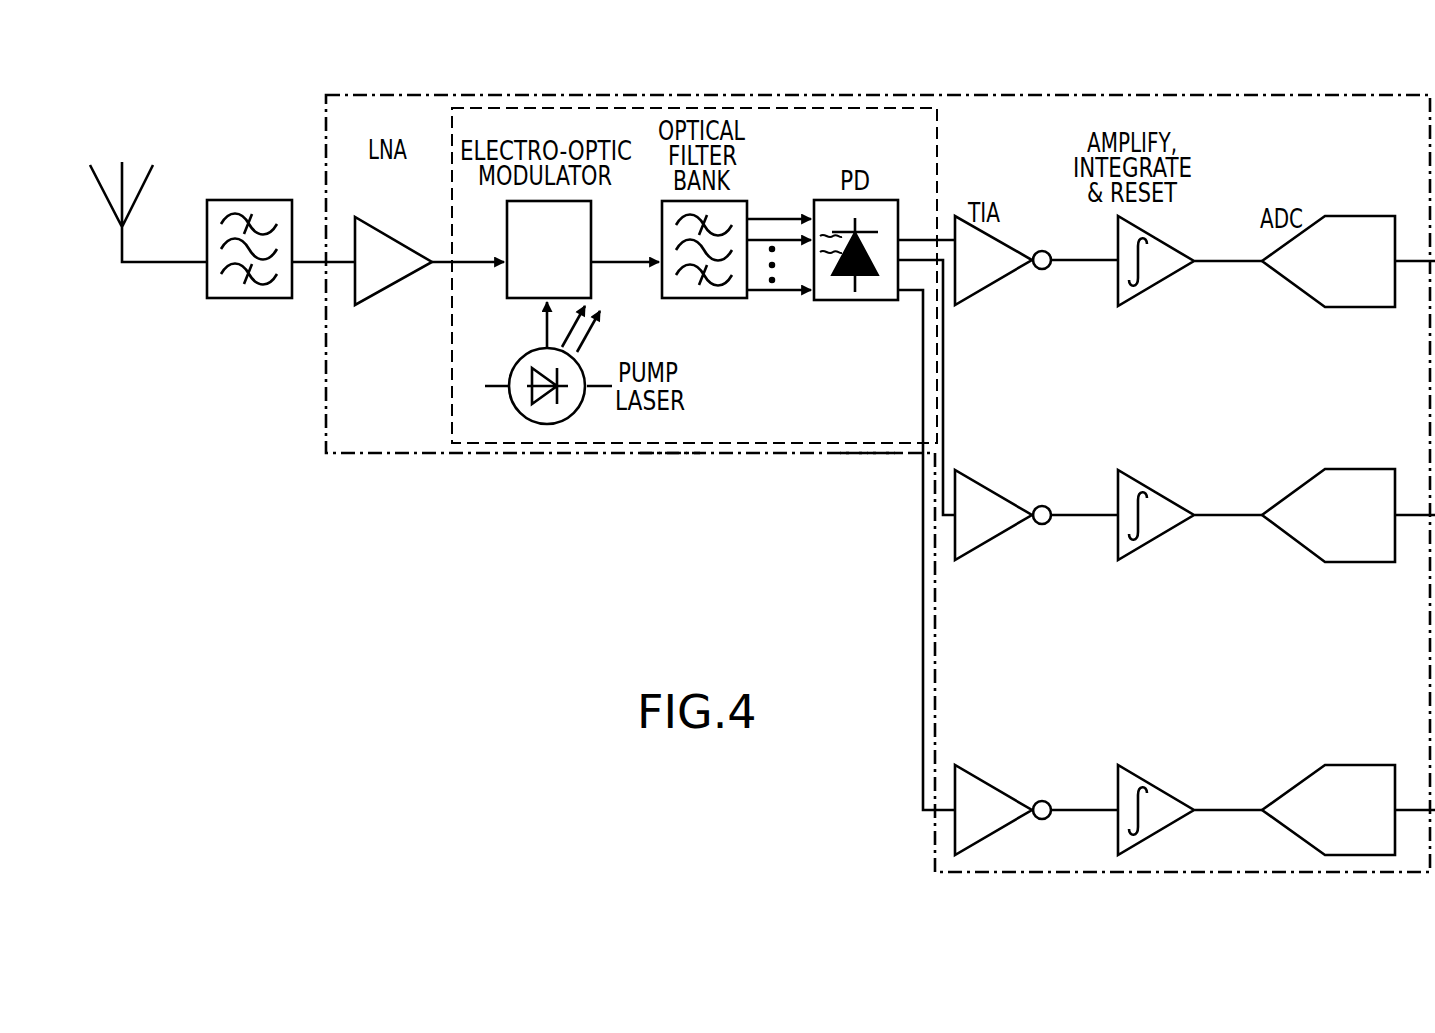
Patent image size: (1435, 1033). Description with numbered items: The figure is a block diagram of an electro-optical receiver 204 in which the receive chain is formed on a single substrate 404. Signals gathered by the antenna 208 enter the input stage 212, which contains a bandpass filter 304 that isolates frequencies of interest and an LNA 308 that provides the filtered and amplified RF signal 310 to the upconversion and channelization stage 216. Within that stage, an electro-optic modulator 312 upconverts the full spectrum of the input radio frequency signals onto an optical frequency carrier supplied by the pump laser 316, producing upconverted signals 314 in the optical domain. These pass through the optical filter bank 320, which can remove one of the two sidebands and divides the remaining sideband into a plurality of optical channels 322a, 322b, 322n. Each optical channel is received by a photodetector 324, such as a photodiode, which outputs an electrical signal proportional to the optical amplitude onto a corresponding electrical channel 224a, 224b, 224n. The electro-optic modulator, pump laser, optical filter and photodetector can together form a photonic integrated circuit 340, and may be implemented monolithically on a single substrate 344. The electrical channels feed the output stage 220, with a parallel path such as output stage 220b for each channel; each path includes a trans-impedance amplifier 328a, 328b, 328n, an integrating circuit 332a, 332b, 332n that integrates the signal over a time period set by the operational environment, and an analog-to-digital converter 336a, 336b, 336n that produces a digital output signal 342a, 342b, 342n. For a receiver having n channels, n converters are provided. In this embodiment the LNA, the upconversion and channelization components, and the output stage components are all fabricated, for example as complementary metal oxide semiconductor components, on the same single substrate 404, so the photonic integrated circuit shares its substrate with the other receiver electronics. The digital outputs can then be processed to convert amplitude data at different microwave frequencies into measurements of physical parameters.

The electro-optical receiver 204 is at (782, 17).
The antenna 208 is at (122, 262).
The input stage 212 is at (280, 114).
The upconversion and channelization stage 216 is at (521, 132).
The output stage 220 is at (1134, 122).
The output stage 220b is at (1182, 543).
The electrical channel 224a is at (913, 240).
The electrical channel 224b is at (945, 397).
The electrical channel 224n is at (921, 726).
The bandpass filter 304 is at (252, 298).
The LNA 308 is at (365, 305).
The amplified RF signal 310 is at (472, 256).
The electro-optic modulator 312 is at (591, 232).
The upconverted signals 314 is at (612, 262).
The pump laser 316 is at (547, 424).
The optical filter bank 320 is at (720, 298).
The optical channel 322a is at (768, 218).
The optical channel 322b is at (780, 238).
The optical channel 322n is at (772, 292).
The photodetector 324 is at (880, 200).
The amplifier 328a is at (990, 283).
The amplifier 328b is at (990, 538).
The amplifier 328n is at (990, 838).
The integrating circuit 332a is at (1150, 282).
The integrating circuit 332b is at (1150, 537).
The integrating circuit 332n is at (1150, 833).
The analog-to-digital converter 336a is at (1340, 308).
The analog-to-digital converter 336b is at (1340, 562).
The analog-to-digital converter 336n is at (1340, 857).
The photonic integrated circuit 340 is at (767, 443).
The digital output signal 342a is at (1412, 258).
The digital output signal 342b is at (1410, 512).
The digital output signal 342n is at (1412, 808).
The single substrate 344 is at (673, 453).
The single substrate 404 is at (870, 453).